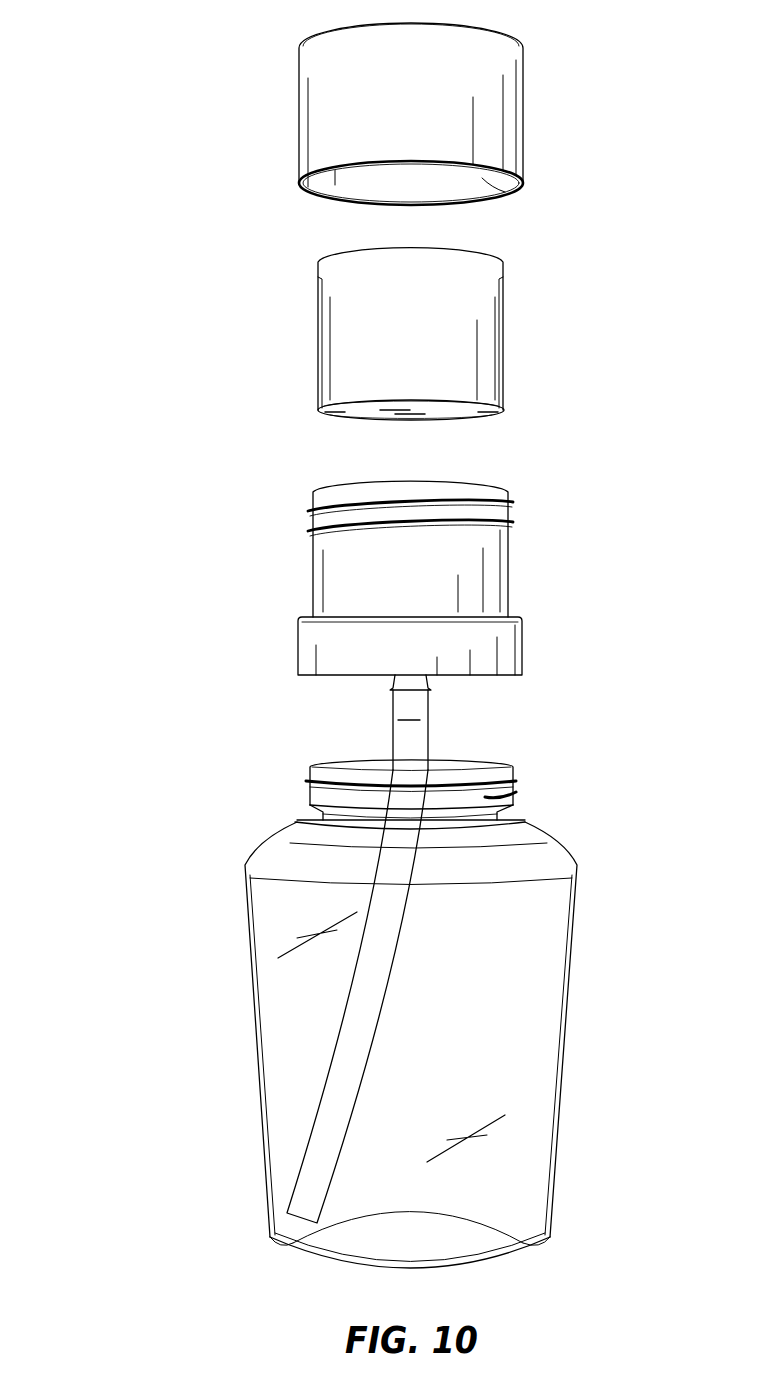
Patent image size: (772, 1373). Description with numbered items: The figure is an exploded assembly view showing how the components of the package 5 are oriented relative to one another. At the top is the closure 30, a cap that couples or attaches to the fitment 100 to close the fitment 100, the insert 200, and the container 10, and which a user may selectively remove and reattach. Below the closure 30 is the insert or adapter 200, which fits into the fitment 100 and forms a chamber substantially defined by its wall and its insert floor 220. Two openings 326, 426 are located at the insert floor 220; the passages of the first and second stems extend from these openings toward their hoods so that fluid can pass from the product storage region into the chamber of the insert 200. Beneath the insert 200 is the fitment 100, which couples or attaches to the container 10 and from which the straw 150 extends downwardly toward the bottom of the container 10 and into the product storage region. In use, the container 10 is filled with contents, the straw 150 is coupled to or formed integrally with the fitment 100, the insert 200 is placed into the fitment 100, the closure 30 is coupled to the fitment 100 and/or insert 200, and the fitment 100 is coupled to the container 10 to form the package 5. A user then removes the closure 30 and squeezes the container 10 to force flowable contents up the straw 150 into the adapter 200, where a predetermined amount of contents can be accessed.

The package 5 is at (168, 89).
The closure 30 is at (483, 178).
The insert 200 is at (465, 365).
The opening 326 is at (312, 420).
The opening 426 is at (508, 420).
The insert floor 220 is at (447, 412).
The fitment 100 is at (505, 650).
The straw 150 is at (418, 738).
The container 10 is at (562, 1082).